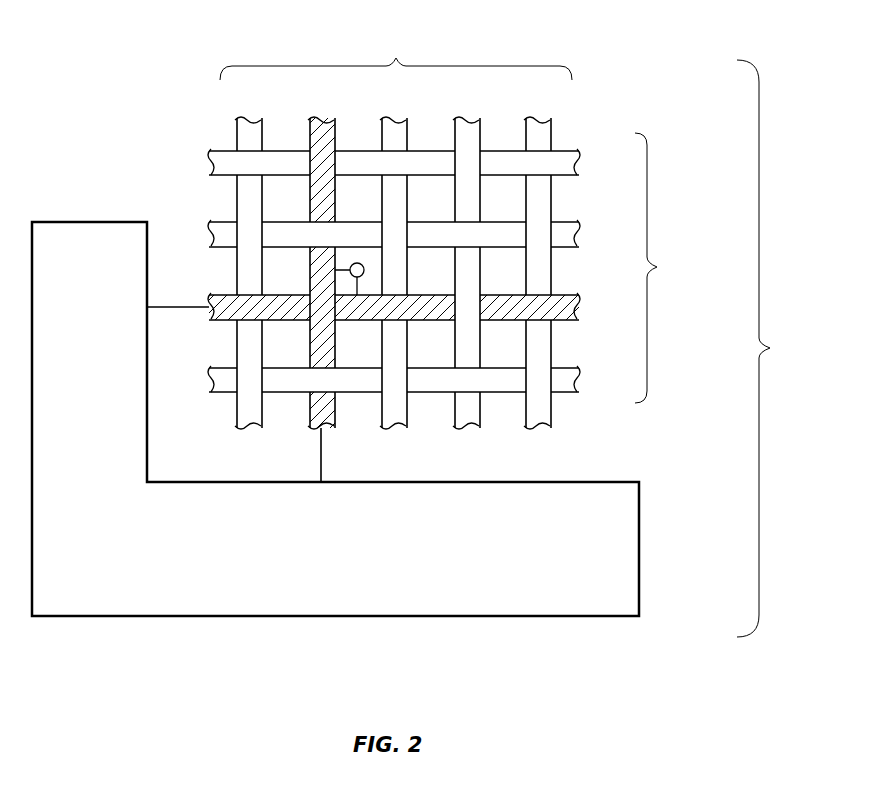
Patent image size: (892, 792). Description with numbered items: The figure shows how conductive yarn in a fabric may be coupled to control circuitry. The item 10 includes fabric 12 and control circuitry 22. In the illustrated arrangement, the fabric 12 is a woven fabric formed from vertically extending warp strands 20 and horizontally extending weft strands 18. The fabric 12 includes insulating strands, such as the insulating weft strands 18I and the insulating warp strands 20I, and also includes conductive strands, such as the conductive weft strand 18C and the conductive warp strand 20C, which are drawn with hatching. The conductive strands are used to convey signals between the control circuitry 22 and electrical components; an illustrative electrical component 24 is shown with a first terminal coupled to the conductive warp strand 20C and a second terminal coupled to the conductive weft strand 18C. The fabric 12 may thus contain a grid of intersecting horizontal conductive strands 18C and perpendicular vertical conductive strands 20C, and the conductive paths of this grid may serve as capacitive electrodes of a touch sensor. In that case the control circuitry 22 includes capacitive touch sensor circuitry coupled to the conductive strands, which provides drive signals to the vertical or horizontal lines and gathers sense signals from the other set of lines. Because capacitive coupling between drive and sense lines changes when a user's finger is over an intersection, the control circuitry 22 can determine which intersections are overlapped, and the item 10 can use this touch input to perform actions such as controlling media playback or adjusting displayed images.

The item 10 is at (767, 348).
The fabric 12 is at (653, 53).
The weft strands 18 is at (656, 268).
The insulating strand 18I is at (567, 158).
The conductive strand 18C is at (568, 293).
The warp strands 20 is at (396, 59).
The insulating strand 20I is at (242, 133).
The conductive strand 20C is at (327, 135).
The control circuitry 22 is at (483, 616).
The electrical component 24 is at (365, 268).